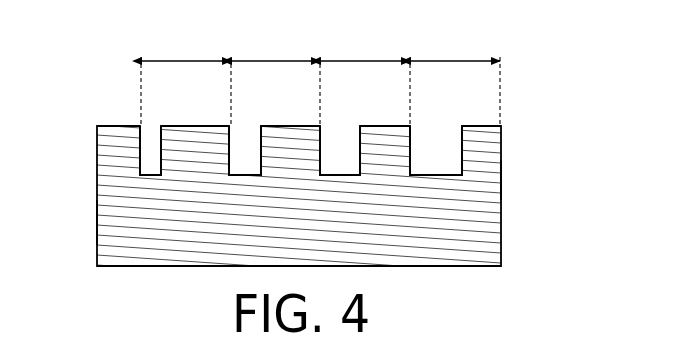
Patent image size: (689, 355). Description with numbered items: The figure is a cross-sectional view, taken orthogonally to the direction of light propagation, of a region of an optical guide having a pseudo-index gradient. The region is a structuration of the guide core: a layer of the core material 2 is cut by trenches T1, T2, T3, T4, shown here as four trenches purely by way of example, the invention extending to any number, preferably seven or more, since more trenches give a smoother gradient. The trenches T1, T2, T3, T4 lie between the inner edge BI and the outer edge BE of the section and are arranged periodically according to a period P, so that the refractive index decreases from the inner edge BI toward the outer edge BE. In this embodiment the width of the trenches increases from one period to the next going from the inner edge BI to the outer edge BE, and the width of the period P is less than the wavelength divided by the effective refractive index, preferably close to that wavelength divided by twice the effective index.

The core material 2 is at (460, 225).
The inner edge BI is at (97, 222).
The outer edge BE is at (501, 178).
The trench T1 is at (152, 123).
The trench T2 is at (252, 123).
The trench T3 is at (347, 123).
The trench T4 is at (440, 123).
The period P is at (320, 78).